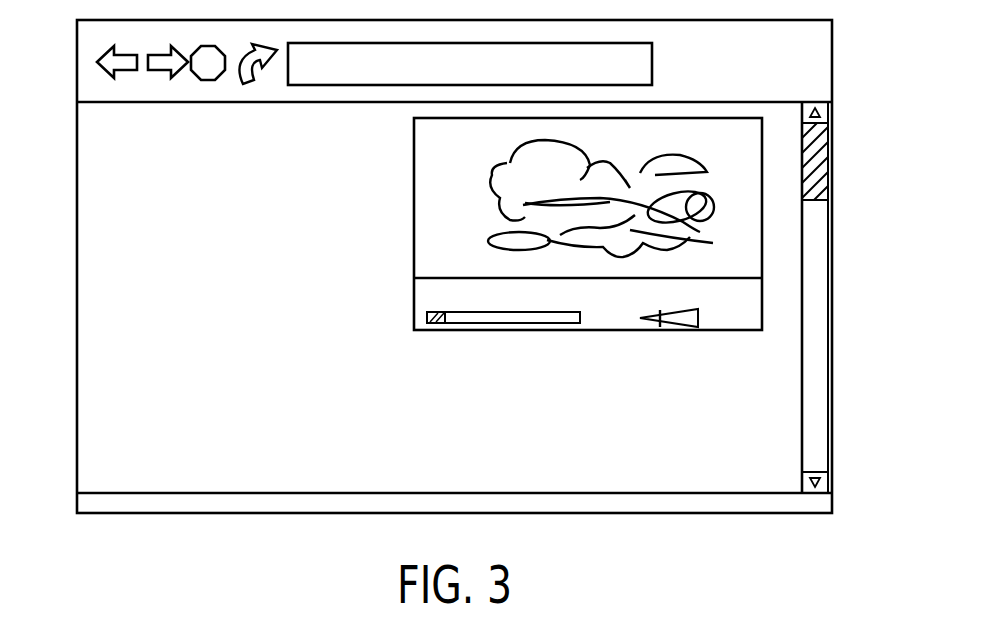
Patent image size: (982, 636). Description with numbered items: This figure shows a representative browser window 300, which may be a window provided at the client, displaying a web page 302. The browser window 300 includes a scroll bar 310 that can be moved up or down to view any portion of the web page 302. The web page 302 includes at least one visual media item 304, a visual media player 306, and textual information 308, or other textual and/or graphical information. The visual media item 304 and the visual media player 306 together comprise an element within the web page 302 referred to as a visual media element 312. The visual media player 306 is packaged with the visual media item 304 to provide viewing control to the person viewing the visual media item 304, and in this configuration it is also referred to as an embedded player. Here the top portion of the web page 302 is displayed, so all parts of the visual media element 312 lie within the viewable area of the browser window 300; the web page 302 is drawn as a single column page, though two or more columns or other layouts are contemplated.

The browser window 300 is at (77, 382).
The web page 302 is at (95, 467).
The visual media item 304 is at (655, 140).
The visual media player 306 is at (750, 318).
The textual information 308 is at (100, 257).
The scroll bar 310 is at (831, 155).
The visual media element 312 is at (744, 96).